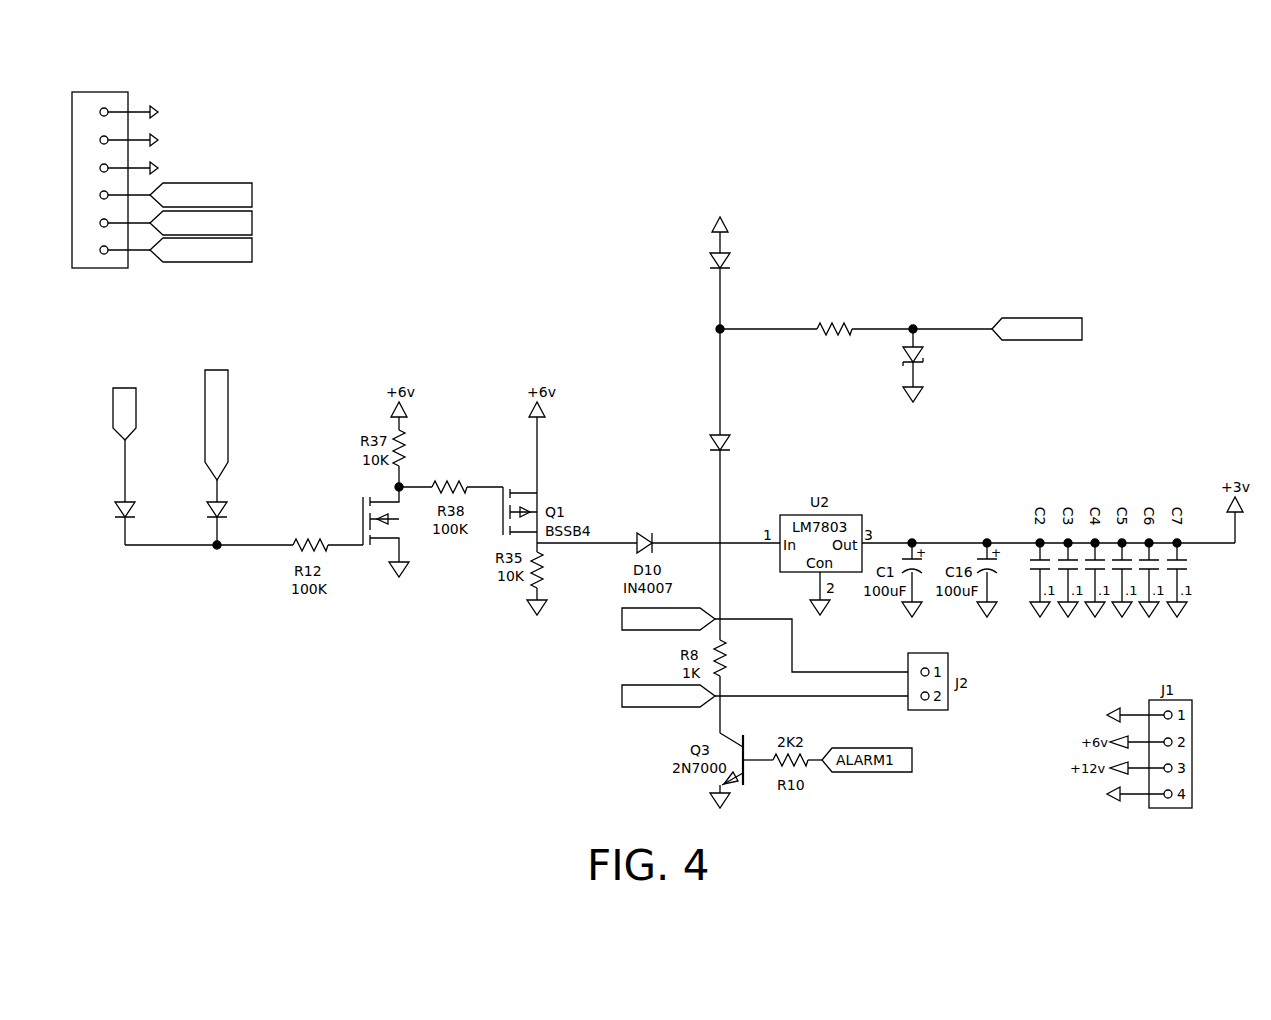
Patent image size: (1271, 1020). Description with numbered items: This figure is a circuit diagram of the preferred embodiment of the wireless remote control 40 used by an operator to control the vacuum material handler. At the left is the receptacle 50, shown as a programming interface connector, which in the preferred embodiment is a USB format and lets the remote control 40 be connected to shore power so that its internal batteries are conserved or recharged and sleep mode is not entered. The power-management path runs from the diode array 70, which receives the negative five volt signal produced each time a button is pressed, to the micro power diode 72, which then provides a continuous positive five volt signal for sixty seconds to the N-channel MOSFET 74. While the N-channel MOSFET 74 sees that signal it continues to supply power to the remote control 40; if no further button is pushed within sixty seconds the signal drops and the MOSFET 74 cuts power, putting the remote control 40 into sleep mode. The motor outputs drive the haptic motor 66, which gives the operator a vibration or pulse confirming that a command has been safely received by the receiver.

The receptacle 50 is at (247, 137).
The wireless remote control 40 is at (1031, 238).
The diode array 70 is at (125, 388).
The micro power diode 72 is at (217, 370).
The N-channel MOSFET 74 is at (362, 495).
The haptic motor 66 is at (622, 619).